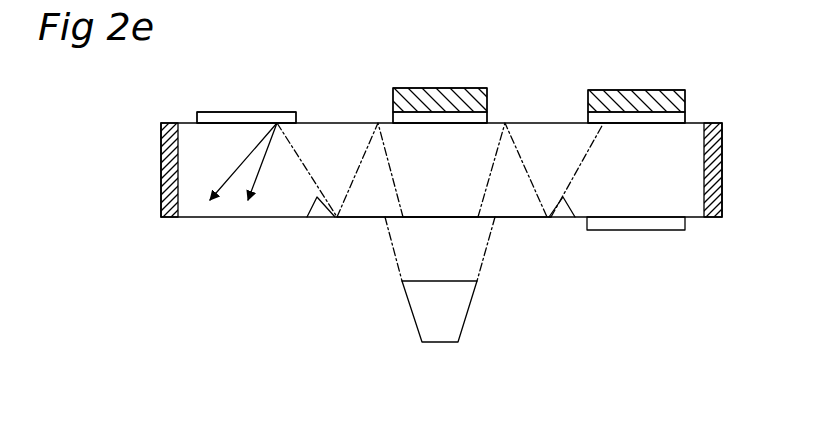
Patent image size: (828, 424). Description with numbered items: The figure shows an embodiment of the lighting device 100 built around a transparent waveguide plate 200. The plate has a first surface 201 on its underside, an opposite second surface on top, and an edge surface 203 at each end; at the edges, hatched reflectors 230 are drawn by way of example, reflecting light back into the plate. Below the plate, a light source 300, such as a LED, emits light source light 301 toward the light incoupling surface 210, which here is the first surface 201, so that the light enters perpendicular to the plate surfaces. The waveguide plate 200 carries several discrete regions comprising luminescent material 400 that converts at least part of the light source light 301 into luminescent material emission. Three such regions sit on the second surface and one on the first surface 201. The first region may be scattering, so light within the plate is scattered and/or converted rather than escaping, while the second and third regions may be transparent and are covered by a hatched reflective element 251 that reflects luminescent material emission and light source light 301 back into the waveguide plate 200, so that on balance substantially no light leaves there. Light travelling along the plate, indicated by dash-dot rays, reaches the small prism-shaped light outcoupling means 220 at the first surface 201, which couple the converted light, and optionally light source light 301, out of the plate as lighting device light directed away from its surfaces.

The lighting device 100 is at (517, 95).
The transparent waveguide plate 200 is at (495, 264).
The first surface 201 is at (520, 218).
The edge surface 203 is at (161, 190).
The light incoupling surface 210 is at (440, 218).
The light outcoupling means 220 is at (320, 218).
The reflector 230 is at (161, 153).
The reflective element 251 is at (420, 100).
The light source 300 is at (443, 350).
The light source light 301 is at (413, 252).
The luminescent material 400 is at (213, 117).